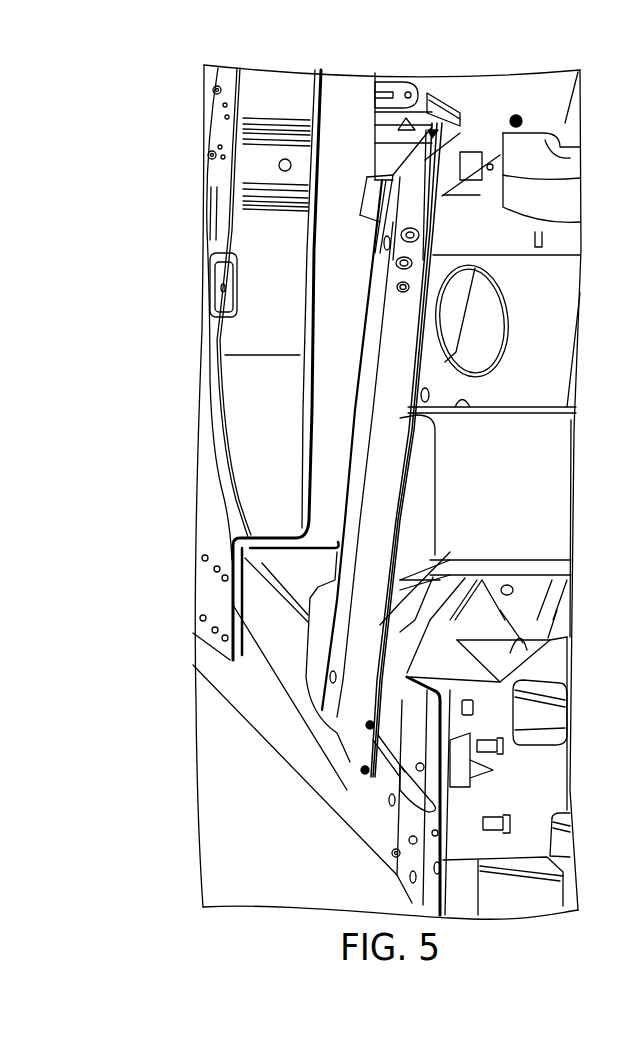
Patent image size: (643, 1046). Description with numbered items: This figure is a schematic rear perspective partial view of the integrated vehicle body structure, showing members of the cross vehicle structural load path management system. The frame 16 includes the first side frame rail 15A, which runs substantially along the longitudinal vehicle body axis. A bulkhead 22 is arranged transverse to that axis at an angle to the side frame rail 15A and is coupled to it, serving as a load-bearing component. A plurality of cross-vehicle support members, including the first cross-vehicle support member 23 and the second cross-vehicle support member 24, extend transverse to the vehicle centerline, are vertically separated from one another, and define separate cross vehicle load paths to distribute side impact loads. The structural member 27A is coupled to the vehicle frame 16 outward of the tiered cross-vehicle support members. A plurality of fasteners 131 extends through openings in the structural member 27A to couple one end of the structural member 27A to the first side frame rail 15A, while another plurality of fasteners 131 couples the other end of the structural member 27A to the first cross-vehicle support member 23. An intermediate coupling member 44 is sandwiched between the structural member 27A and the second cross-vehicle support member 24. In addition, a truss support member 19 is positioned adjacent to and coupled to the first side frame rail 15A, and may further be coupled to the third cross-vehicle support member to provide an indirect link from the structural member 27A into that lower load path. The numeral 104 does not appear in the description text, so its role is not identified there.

The frame 16 is at (178, 486).
The fasteners 131 is at (367, 177).
The first cross-vehicle support member 23 is at (480, 140).
The bracket 104 is at (363, 213).
The structural member 27A is at (326, 370).
The bulkhead 22 is at (552, 318).
The intermediate coupling member 44 is at (425, 470).
The second cross-vehicle support member 24 is at (552, 458).
The truss support member 19 is at (417, 600).
The first side frame rail 15A is at (268, 713).